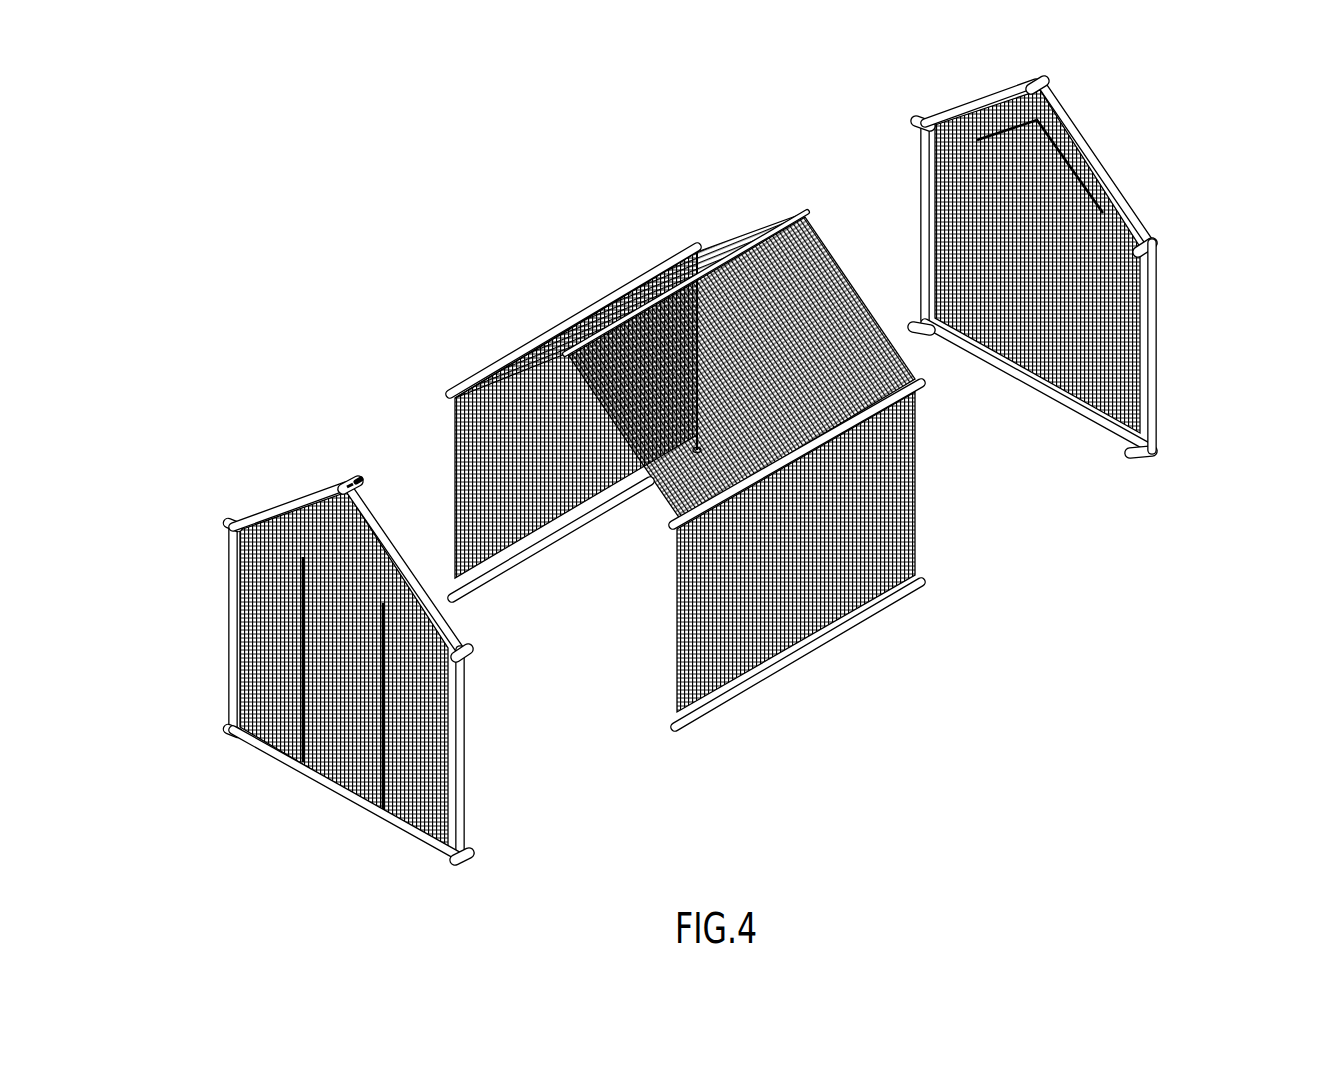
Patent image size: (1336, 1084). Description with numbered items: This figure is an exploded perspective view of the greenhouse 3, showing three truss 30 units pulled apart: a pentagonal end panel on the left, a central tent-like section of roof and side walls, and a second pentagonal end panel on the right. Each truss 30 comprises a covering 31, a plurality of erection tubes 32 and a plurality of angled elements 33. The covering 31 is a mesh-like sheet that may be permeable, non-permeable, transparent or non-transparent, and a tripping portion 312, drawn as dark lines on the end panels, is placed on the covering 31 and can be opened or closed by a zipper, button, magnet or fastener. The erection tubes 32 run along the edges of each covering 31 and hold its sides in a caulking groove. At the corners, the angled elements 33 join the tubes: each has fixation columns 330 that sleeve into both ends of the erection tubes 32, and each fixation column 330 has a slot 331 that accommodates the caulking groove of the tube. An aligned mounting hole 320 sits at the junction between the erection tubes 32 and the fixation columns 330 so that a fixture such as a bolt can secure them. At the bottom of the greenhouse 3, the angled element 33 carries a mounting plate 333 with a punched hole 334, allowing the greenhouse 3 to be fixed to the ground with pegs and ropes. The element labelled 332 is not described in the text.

The greenhouse 3 is at (903, 695).
The truss 30 is at (198, 660).
The covering 31 is at (237, 612).
The erection tube 32 is at (262, 517).
The angled element 33 is at (337, 478).
The fixation column 330 is at (340, 480).
The slot 331 is at (1027, 90).
The connector pin 332 is at (357, 480).
The mounting plate 333 is at (443, 857).
The punched hole 334 is at (443, 860).
The tripping portion 312 is at (403, 716).
The mounting hole 320 is at (553, 350).